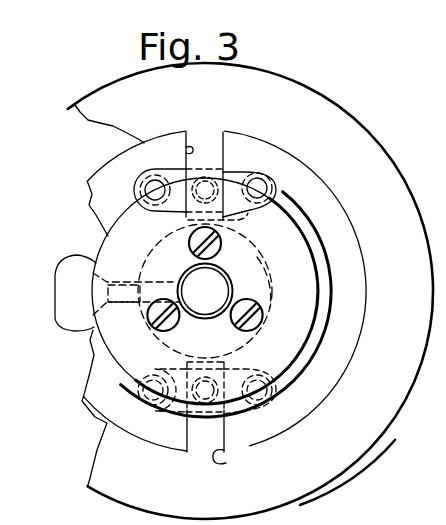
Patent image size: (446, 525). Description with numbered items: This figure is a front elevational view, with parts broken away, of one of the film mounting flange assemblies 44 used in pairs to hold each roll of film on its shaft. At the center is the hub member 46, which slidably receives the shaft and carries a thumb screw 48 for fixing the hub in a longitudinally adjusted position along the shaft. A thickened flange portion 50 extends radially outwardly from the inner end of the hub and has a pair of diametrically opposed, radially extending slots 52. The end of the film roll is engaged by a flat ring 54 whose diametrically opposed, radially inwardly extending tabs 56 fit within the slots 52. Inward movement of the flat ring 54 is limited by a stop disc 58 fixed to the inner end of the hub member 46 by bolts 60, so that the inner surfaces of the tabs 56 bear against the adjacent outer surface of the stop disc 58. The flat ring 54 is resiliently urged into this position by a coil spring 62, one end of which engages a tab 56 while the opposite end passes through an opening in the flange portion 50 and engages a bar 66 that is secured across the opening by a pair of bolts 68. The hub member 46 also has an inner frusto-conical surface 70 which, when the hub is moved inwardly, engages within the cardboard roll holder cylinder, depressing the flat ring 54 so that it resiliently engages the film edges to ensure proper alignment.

The film mounting flange assembly 44 is at (392, 88).
The central hub member 46 is at (232, 337).
The thumb screw 48 is at (60, 316).
The thickened flange portion 50 is at (240, 177).
The radially extending slots 52 is at (186, 150).
The flat ring 54 is at (350, 458).
The projections or tabs 56 is at (223, 140).
The stop disc 58 is at (305, 252).
The bolts 60 is at (230, 243).
The coil spring 62 is at (172, 227).
The bar 66 is at (167, 427).
The bolts 68 is at (283, 408).
The inner frusto-conical surface 70 is at (100, 410).